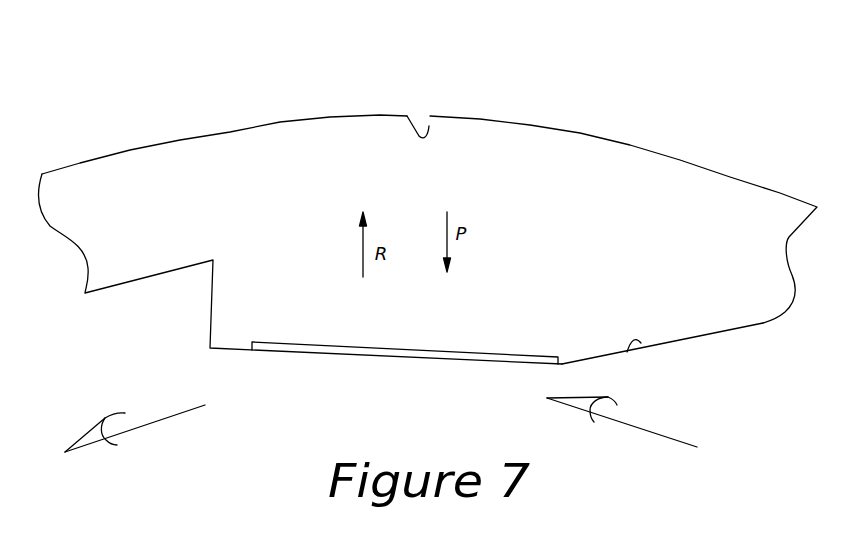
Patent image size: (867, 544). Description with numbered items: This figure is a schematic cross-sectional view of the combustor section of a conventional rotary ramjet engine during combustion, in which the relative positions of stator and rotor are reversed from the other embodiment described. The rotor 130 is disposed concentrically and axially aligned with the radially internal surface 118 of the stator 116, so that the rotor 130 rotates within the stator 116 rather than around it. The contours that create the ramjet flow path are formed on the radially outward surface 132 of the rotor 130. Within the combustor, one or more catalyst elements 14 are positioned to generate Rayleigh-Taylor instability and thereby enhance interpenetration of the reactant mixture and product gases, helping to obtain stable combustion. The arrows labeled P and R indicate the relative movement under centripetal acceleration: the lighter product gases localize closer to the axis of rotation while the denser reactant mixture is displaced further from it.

The catalyst element 14 is at (397, 357).
The stator 116 is at (540, 127).
The radially internal surface 118 is at (429, 126).
The rotor 130 is at (700, 337).
The radially outward surface 132 is at (641, 343).